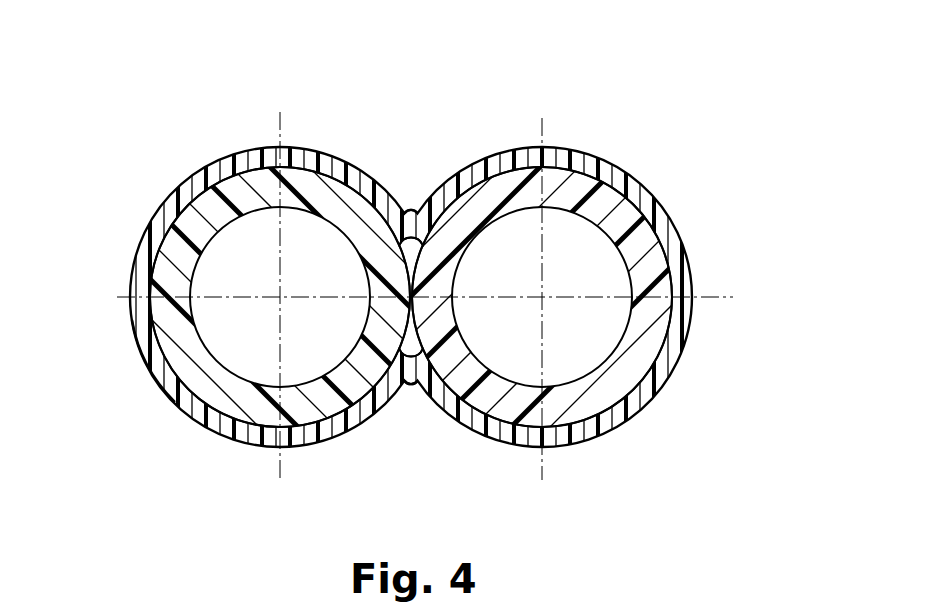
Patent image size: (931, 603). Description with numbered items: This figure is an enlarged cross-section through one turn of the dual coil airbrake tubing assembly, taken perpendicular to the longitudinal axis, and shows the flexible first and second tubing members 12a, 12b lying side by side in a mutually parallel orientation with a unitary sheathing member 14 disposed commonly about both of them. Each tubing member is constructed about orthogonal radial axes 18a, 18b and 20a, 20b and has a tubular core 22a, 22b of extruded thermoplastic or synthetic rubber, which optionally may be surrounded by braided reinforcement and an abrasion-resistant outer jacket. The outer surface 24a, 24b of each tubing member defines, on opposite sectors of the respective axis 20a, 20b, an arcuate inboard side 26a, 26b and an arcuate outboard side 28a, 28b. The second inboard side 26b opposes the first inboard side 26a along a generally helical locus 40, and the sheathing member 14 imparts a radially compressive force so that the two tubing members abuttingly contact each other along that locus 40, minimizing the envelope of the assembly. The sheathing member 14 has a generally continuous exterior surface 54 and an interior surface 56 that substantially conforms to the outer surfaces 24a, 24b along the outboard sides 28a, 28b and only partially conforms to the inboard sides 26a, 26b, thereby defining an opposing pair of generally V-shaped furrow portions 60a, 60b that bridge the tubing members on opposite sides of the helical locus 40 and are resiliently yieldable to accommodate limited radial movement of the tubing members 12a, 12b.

The first tubing member 12a is at (588, 226).
The second tubing member 12b is at (346, 231).
The sheathing member 14 is at (683, 248).
The radial axis 18a is at (722, 298).
The radial axis 18b is at (103, 297).
The radial axis 20a is at (543, 117).
The radial axis 20b is at (283, 120).
The tubular core 22a is at (497, 226).
The tubular core 22b is at (233, 226).
The outer surface 24a is at (483, 421).
The outer surface 24b is at (205, 408).
The inboard side 26a is at (402, 386).
The inboard side 26b is at (408, 199).
The outboard side 28a is at (670, 370).
The outboard side 28b is at (153, 370).
The helical locus 40 is at (413, 294).
The exterior surface 54 is at (601, 185).
The interior surface 56 is at (632, 224).
The furrow portion 60a is at (414, 225).
The furrow portion 60b is at (412, 370).